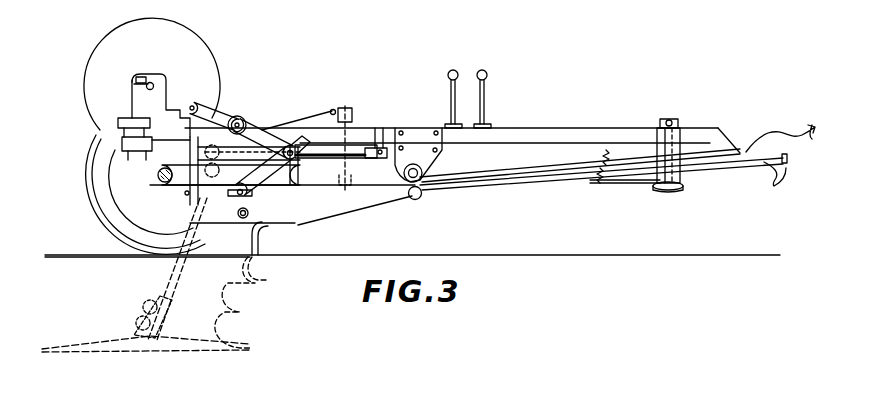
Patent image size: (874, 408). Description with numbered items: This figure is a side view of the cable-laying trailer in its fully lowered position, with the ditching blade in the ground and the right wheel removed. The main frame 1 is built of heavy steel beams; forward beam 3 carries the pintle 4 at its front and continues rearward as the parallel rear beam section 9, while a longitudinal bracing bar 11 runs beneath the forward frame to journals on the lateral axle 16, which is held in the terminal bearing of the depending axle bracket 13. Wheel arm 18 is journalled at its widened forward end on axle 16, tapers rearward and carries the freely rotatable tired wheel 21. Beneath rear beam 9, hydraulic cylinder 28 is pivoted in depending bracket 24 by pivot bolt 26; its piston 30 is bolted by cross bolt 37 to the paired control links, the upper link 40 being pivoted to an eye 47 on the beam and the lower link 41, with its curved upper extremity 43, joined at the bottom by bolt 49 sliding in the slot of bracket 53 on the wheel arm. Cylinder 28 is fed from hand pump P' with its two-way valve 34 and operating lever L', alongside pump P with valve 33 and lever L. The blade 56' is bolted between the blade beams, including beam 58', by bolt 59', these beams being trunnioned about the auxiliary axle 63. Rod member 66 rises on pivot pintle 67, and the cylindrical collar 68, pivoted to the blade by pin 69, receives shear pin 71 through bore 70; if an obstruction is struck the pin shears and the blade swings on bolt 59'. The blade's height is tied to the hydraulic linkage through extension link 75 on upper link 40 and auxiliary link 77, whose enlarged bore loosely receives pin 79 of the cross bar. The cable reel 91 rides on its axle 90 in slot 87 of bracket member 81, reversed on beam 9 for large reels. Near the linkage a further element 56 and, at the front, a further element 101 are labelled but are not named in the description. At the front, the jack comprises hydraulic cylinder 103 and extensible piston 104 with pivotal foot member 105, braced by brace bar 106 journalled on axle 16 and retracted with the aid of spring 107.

The main frame 1 is at (605, 129).
The forward beam 3 is at (563, 140).
The pintle 4 is at (756, 150).
The rear beam section 9 is at (124, 122).
The longitudinal bracing bar 11 is at (498, 168).
The axle bracket 13 is at (430, 150).
The axle 16 is at (421, 180).
The wheel arm 18 is at (312, 184).
The tired wheel 21 is at (108, 236).
The depending bracket 24 is at (380, 130).
The pivot bolt 26 is at (378, 158).
The hydraulic cylinder 28 is at (326, 158).
The piston 30 is at (290, 157).
The valve 33 is at (458, 124).
The valve 34 is at (484, 124).
The cross bolt 37 is at (263, 138).
The upper link 40 is at (250, 124).
The lower link 41 is at (252, 160).
The upper extremity of lower link 43 is at (302, 142).
The eye 47 is at (239, 122).
The bolt 49 is at (246, 194).
The depending bracket 53 is at (220, 198).
The control rod 56 is at (297, 111).
The blade 56' is at (155, 291).
The blade beam 58' is at (287, 236).
The bolt 59' is at (258, 213).
The auxiliary axle 63 is at (416, 200).
The rod member 66 is at (350, 124).
The pivot pintle 67 is at (349, 186).
The cylindrical collar 68 is at (350, 108).
The pin 69 is at (333, 109).
The bore 70 is at (345, 107).
The shear pin 71 is at (352, 115).
The extension link 75 is at (215, 110).
The auxiliary link 77 is at (188, 147).
The pin 79 is at (186, 196).
The bracket member 81 is at (166, 102).
The slot 87 is at (134, 84).
The axle 90 is at (152, 82).
The cable reel 91 is at (188, 40).
The post 101 is at (676, 138).
The hydraulic cylinder 103 is at (672, 118).
The extensible piston 104 is at (684, 182).
The foot member 105 is at (676, 192).
The brace bar 106 is at (534, 178).
The spring 107 is at (608, 172).
The operating lever L is at (441, 81).
The operating lever L' is at (495, 79).
The hydraulic hand pump P is at (434, 117).
The hydraulic hand pump P' is at (505, 118).